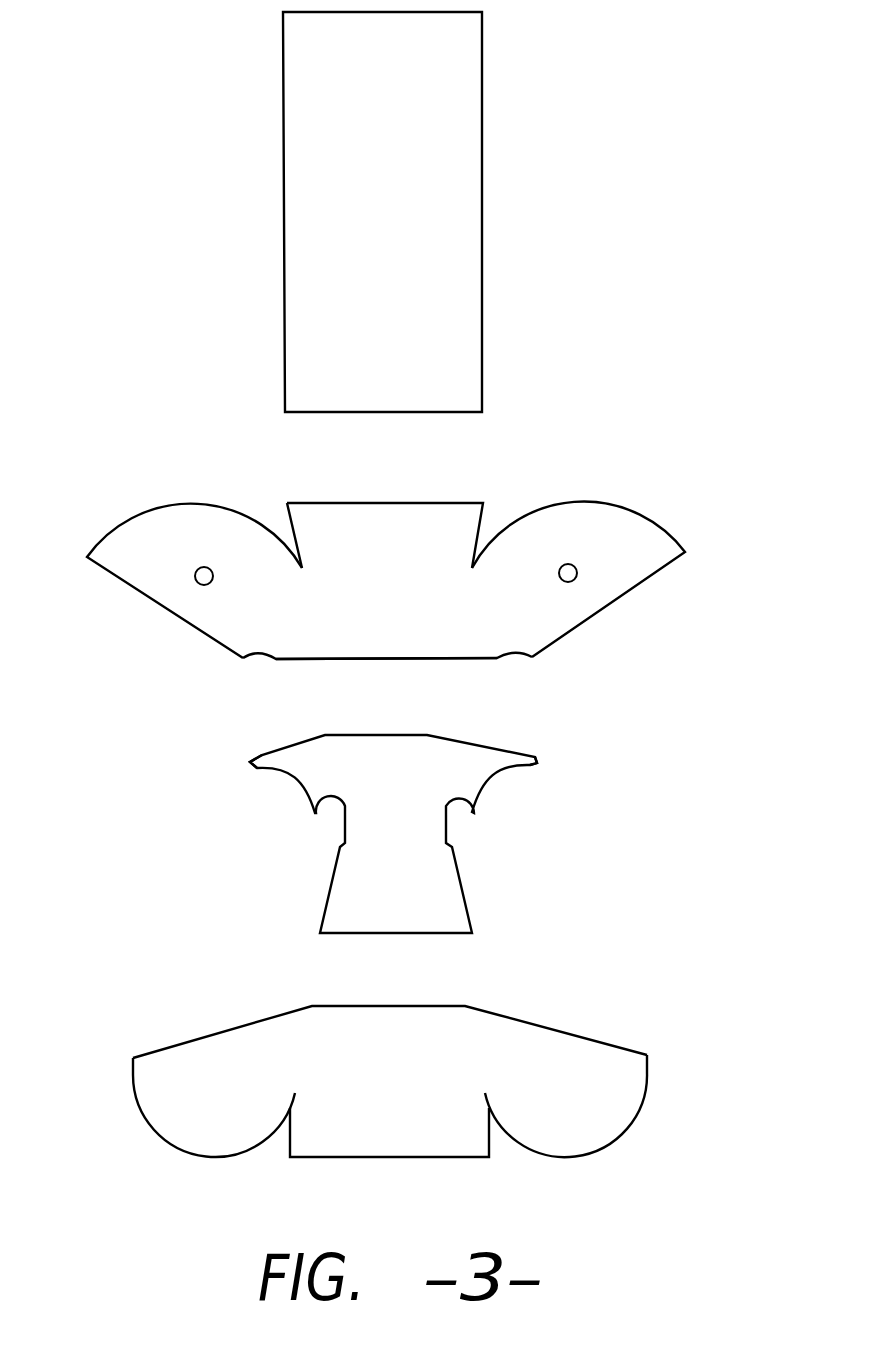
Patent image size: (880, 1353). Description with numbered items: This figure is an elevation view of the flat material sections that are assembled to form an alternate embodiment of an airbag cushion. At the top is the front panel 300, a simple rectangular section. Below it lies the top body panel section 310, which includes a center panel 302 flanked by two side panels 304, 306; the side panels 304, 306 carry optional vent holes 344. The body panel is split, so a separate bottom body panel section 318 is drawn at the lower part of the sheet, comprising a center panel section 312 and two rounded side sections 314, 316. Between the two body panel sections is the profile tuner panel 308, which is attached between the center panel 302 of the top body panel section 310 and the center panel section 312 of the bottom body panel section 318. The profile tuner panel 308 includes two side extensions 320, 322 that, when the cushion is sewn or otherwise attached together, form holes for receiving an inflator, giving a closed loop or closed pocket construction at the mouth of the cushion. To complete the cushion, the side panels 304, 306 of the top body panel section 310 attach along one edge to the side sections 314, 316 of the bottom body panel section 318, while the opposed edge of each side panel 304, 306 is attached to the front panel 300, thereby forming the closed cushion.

The front panel 300 is at (460, 107).
The center panel 302 is at (422, 515).
The side panel 304 is at (605, 517).
The side panel 306 is at (152, 528).
The intermediate connector member 308 is at (445, 748).
The top body panel section 310 is at (323, 660).
The center panel section 312 is at (428, 1158).
The side section 314 is at (597, 1128).
The side section 316 is at (183, 1130).
The bottom body panel section 318 is at (450, 1003).
The side extension 320 is at (260, 755).
The side extension 322 is at (538, 757).
The vent holes 344 is at (195, 578).